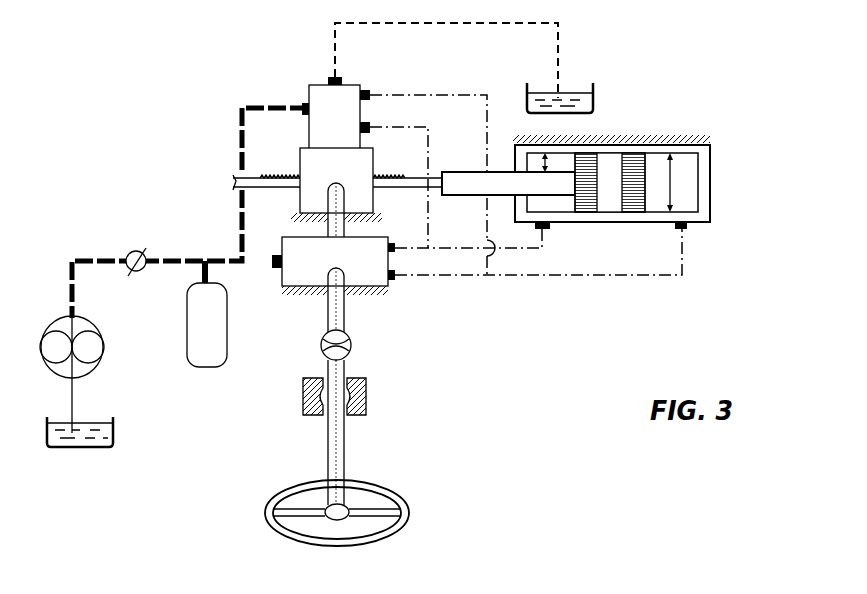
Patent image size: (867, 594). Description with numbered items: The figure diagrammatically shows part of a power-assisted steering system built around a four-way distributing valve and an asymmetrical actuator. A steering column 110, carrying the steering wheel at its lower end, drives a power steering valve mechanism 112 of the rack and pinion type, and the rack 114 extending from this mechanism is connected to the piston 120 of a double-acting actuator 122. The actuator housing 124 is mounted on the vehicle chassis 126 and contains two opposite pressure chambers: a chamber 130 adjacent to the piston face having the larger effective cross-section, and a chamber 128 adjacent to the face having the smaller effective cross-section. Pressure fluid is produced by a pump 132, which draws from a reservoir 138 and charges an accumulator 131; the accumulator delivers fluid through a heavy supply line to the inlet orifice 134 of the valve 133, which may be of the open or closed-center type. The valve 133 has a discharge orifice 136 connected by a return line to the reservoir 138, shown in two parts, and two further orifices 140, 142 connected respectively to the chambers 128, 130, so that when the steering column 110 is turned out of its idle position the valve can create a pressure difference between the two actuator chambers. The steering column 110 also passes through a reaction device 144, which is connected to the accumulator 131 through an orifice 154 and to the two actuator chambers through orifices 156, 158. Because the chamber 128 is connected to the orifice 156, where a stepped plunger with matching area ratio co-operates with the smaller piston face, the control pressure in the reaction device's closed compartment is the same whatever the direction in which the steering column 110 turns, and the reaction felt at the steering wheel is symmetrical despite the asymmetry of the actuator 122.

The steering column 110 is at (337, 452).
The power steering valve mechanism 112 is at (289, 198).
The rack 114 is at (386, 173).
The piston 120 is at (608, 200).
The actuator 122 is at (603, 194).
The housing 124 is at (710, 152).
The vehicle chassis 126 is at (672, 139).
The chamber 128 is at (558, 205).
The chamber 130 is at (660, 203).
The accumulator 131 is at (222, 352).
The pump 132 is at (103, 342).
The valve 133 is at (328, 130).
The inlet orifice 134 is at (305, 100).
The discharge orifice 136 is at (333, 76).
The reservoir 138 is at (113, 421).
The orifice 140 is at (372, 127).
The orifice 142 is at (371, 91).
The reaction device 144 is at (369, 280).
The orifice 154 is at (272, 268).
The orifice 156 is at (396, 243).
The orifice 158 is at (396, 277).